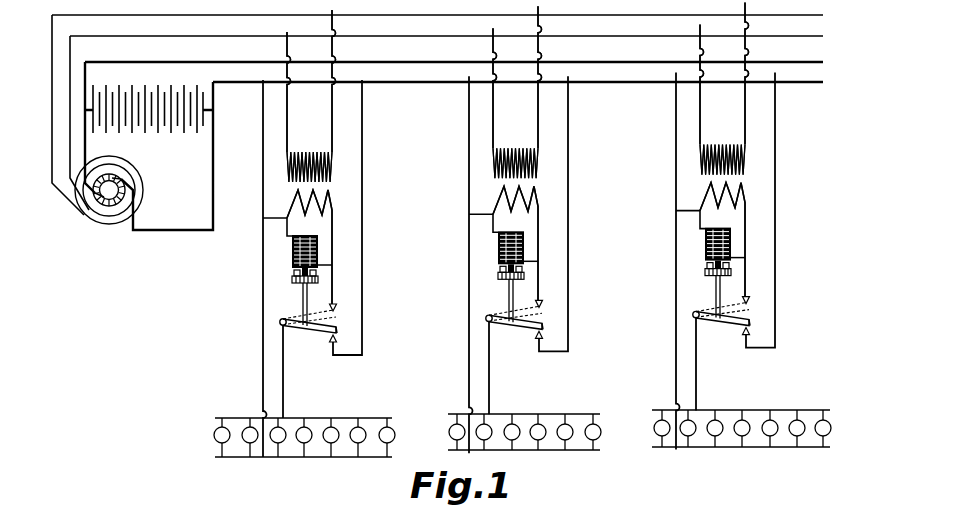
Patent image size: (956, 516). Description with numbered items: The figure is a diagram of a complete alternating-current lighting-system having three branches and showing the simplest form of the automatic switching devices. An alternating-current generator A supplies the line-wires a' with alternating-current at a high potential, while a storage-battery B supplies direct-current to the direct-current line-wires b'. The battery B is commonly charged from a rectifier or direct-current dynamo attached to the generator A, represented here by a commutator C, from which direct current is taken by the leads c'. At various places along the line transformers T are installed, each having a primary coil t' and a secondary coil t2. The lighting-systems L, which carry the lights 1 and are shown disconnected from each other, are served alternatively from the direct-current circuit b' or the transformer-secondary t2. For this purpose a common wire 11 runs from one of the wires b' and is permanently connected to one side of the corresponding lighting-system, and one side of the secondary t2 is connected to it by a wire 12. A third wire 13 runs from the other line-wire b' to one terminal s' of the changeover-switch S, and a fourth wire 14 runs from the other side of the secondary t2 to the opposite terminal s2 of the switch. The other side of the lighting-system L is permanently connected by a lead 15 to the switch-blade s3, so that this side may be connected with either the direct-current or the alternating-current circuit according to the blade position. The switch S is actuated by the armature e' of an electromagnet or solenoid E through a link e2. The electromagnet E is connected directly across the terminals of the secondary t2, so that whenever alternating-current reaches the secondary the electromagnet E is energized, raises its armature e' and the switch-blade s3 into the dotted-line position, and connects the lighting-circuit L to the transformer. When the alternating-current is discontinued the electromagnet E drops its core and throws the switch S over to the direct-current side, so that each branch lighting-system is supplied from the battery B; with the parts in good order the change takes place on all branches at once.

The alternating-current line-wires a' is at (431, 112).
The direct-current line-wires b' is at (454, 69).
The leads c' is at (149, 146).
The storage-battery B is at (185, 135).
The alternating-current generator A is at (109, 190).
The commutator C is at (107, 203).
The transformer T is at (508, 153).
The primary coil t' is at (524, 92).
The secondary coil t2 is at (332, 201).
The common wire 11 is at (263, 302).
The wire 12 is at (266, 221).
The third wire 13 is at (362, 222).
The fourth wire 14 is at (332, 255).
The lead 15 is at (283, 376).
The electromagnet E is at (292, 257).
The armature e' is at (502, 277).
The link e2 is at (303, 303).
The changeover-switch S is at (514, 325).
The switch terminal s' is at (549, 320).
The opposite switch terminal s2 is at (336, 307).
The switch-blade s3 is at (338, 326).
The lighting-system L is at (320, 419).
The lights 1 is at (385, 441).